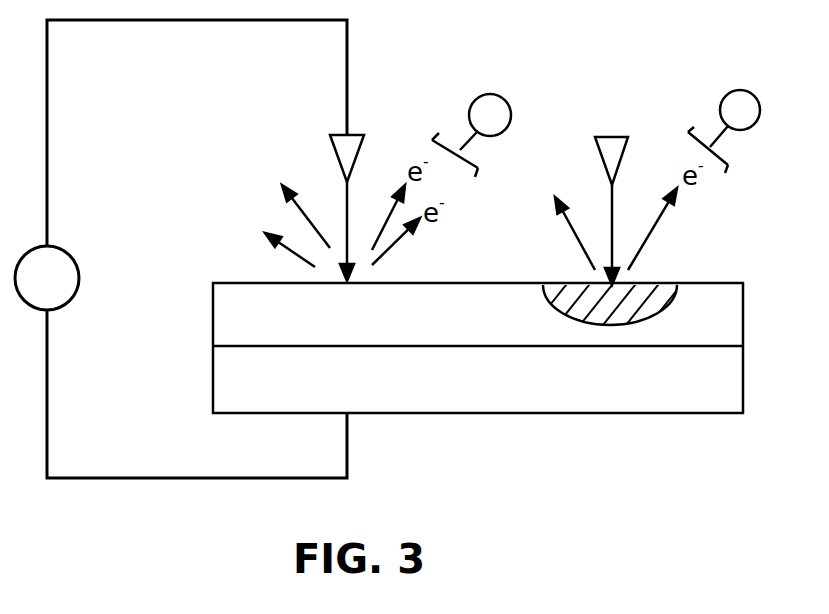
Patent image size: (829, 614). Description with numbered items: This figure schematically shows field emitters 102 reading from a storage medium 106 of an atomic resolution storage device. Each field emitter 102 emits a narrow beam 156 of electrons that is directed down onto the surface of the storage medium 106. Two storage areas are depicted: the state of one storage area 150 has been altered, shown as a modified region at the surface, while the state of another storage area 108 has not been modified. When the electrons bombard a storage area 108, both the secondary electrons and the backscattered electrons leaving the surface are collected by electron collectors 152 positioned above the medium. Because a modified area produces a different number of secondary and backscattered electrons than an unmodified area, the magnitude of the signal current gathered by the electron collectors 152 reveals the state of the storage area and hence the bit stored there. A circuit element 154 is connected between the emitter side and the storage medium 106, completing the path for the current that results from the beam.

The field emitters 102 is at (353, 135).
The storage medium 106 is at (710, 413).
The storage area 108 is at (380, 283).
The storage area 150 is at (660, 285).
The electron collectors 152 is at (743, 90).
The current meter / power source 154 is at (80, 280).
The narrow beams 156 is at (343, 217).